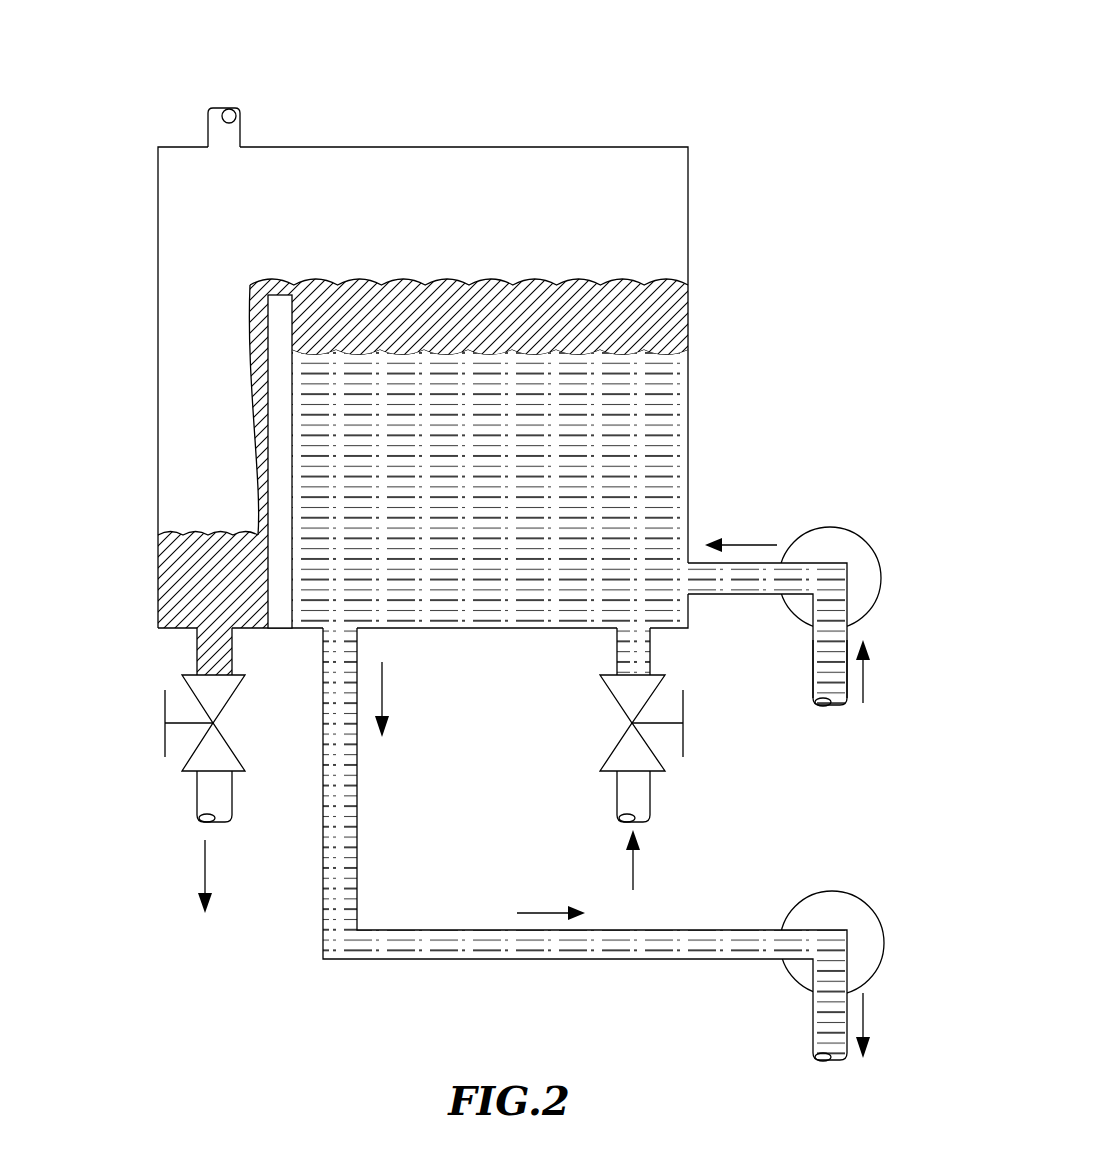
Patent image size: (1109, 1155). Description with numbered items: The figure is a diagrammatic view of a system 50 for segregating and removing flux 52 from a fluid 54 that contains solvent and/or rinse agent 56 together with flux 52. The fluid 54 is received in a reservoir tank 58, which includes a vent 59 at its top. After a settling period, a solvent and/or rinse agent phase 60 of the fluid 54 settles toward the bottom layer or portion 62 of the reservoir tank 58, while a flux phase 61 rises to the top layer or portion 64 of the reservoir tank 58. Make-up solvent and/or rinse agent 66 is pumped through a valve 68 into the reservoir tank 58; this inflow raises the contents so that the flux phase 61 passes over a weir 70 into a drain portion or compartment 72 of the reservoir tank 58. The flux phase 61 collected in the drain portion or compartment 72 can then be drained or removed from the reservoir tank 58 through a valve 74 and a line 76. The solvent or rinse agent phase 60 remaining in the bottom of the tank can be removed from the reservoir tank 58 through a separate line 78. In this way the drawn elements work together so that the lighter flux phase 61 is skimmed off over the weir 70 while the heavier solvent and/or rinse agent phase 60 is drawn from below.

The system 50 is at (745, 100).
The flux 52 is at (843, 632).
The fluid 54 is at (828, 678).
The solvent and/or rinse agent 56 is at (843, 628).
The reservoir tank 58 is at (688, 252).
The vent 59 is at (232, 111).
The solvent and/or rinse agent phase 60 is at (650, 400).
The flux phase 61 is at (665, 303).
The bottom layer or portion 62 is at (688, 455).
The top layer or portion 64 is at (688, 333).
The make-up solvent and/or rinse agent 66 is at (638, 797).
The valve 68 is at (683, 713).
The weir 70 is at (280, 358).
The drain portion or compartment 72 is at (158, 573).
The valve 74 is at (163, 712).
The line 76 is at (193, 788).
The line 78 is at (323, 868).